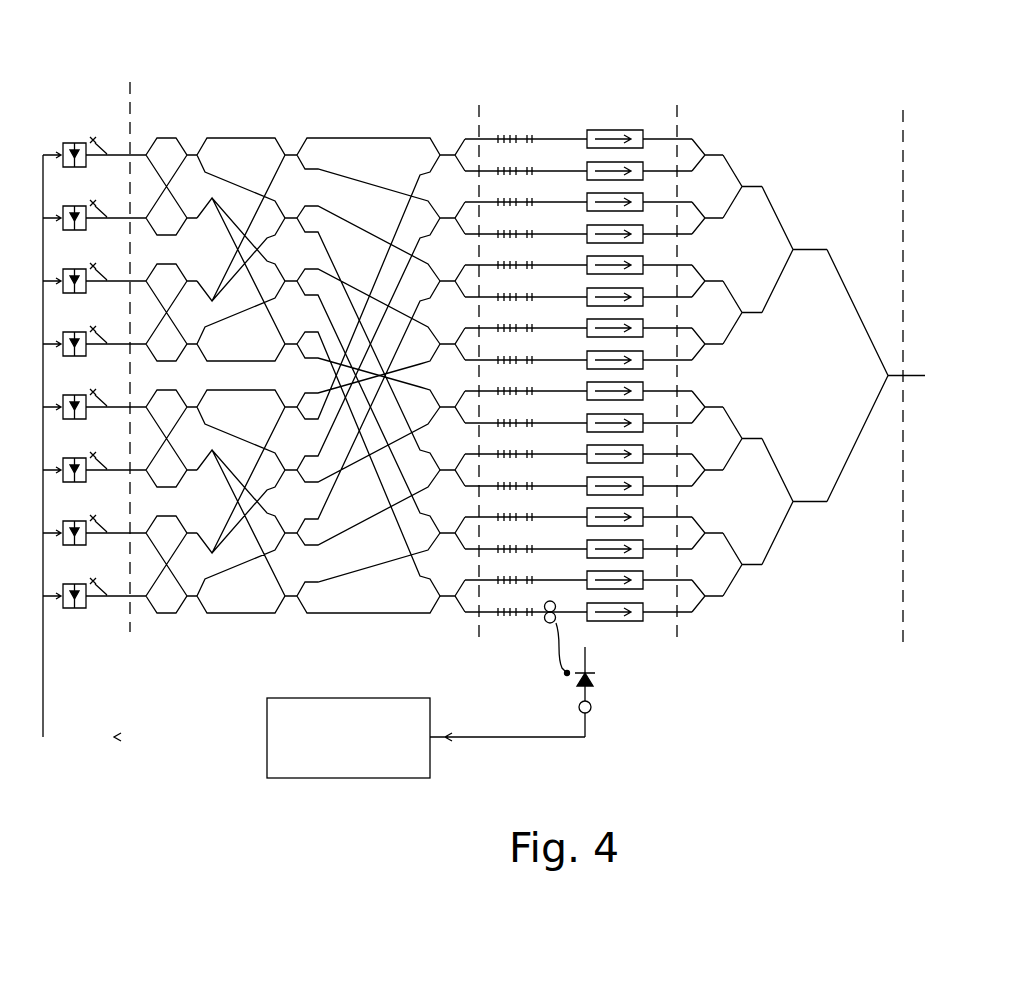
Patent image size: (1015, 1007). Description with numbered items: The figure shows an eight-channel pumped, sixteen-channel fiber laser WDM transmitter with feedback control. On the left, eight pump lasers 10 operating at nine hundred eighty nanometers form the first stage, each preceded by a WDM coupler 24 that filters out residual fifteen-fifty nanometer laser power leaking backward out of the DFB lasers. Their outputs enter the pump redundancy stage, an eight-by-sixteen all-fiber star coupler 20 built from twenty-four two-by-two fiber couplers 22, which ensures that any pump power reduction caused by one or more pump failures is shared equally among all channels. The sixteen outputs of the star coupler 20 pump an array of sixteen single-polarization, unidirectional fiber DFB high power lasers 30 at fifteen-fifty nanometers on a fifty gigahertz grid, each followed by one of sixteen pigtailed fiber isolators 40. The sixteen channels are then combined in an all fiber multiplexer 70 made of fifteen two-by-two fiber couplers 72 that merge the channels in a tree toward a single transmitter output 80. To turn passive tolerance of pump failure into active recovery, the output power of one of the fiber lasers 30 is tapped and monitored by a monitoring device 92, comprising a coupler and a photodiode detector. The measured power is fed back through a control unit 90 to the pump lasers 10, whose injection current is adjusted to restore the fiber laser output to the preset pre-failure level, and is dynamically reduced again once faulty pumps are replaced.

The pump lasers 10 is at (75, 143).
The all-fiber star coupler 20 is at (296, 102).
The 2×2 fiber couplers 22 is at (445, 600).
The WDM coupler 24 is at (104, 583).
The fiber DFB lasers 30 is at (505, 615).
The pigtailed fiber isolators 40 is at (623, 125).
The all fiber multiplexer 70 is at (815, 599).
The 2×2 fiber couplers 72 is at (746, 186).
The output 80 is at (912, 378).
The control unit 90 is at (378, 778).
The monitoring device 92 is at (595, 675).